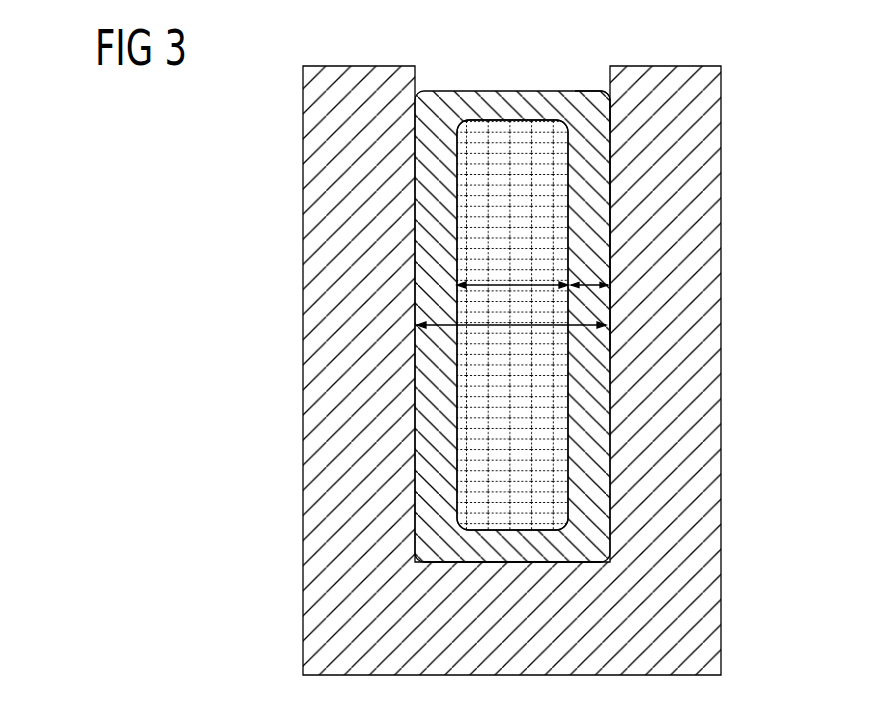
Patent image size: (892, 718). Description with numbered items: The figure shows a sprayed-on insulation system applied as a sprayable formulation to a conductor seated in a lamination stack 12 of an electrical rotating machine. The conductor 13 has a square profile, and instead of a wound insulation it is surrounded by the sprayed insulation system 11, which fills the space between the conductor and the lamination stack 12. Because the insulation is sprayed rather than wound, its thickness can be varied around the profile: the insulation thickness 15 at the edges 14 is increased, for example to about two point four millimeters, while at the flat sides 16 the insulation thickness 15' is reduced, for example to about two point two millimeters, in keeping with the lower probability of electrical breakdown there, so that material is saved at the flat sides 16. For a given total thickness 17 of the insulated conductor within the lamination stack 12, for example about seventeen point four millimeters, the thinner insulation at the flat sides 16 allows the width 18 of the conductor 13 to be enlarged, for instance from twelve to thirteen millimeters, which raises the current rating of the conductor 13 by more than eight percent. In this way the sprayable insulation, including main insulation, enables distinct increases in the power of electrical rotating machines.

The sprayed insulation system 11 is at (597, 197).
The lamination stack 12 is at (707, 393).
The conductor 13 is at (550, 154).
The edges 14 is at (578, 530).
The insulation thickness at the edges 15 is at (591, 78).
The insulation thickness at the flat sides 15' is at (676, 310).
The flat sides 16 is at (588, 238).
The total thickness 17 is at (438, 332).
The width of the conductor 18 is at (492, 276).